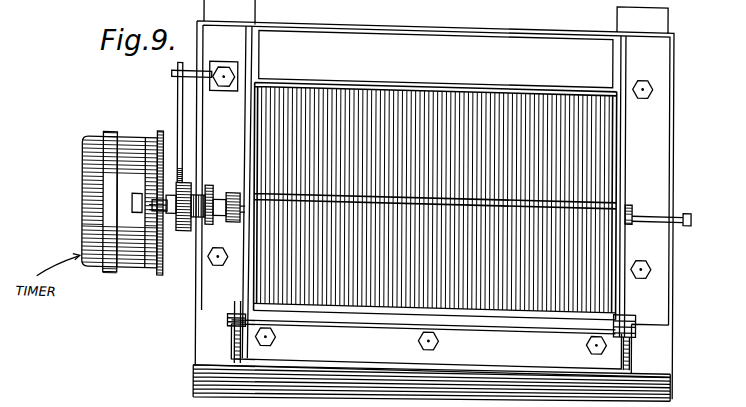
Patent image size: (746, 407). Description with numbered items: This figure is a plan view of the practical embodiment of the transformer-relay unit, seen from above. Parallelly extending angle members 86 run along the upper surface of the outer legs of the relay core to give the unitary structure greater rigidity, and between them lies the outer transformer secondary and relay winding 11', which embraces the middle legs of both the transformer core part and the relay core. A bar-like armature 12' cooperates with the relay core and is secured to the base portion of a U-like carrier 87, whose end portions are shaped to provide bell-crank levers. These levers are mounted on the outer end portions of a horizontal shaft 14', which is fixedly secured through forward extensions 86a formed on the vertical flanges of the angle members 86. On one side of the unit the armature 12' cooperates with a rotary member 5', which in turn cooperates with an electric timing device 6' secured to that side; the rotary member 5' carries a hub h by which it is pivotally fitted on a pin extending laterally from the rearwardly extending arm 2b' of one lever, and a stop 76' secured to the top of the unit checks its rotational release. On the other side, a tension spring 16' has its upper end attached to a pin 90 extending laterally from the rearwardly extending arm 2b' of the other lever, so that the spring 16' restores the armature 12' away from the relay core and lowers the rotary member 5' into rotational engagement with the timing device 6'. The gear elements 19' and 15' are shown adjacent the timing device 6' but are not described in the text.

The angle members 86 is at (235, 39).
The transformer secondary and relay winding 11' is at (435, 174).
The horizontal shaft 14' is at (423, 332).
The U-like carrier 87 is at (431, 350).
The armature 12' is at (449, 360).
The rearwardly extending arm 2b' is at (453, 311).
The forward extensions 86a is at (233, 340).
The pin 90 is at (677, 203).
The tension spring 16' is at (673, 230).
The stop 76' is at (189, 76).
The rotary member 5' is at (167, 122).
The hub h is at (193, 196).
The gear 19' is at (211, 216).
The gear 15' is at (197, 211).
The electric timing device 6' is at (123, 214).